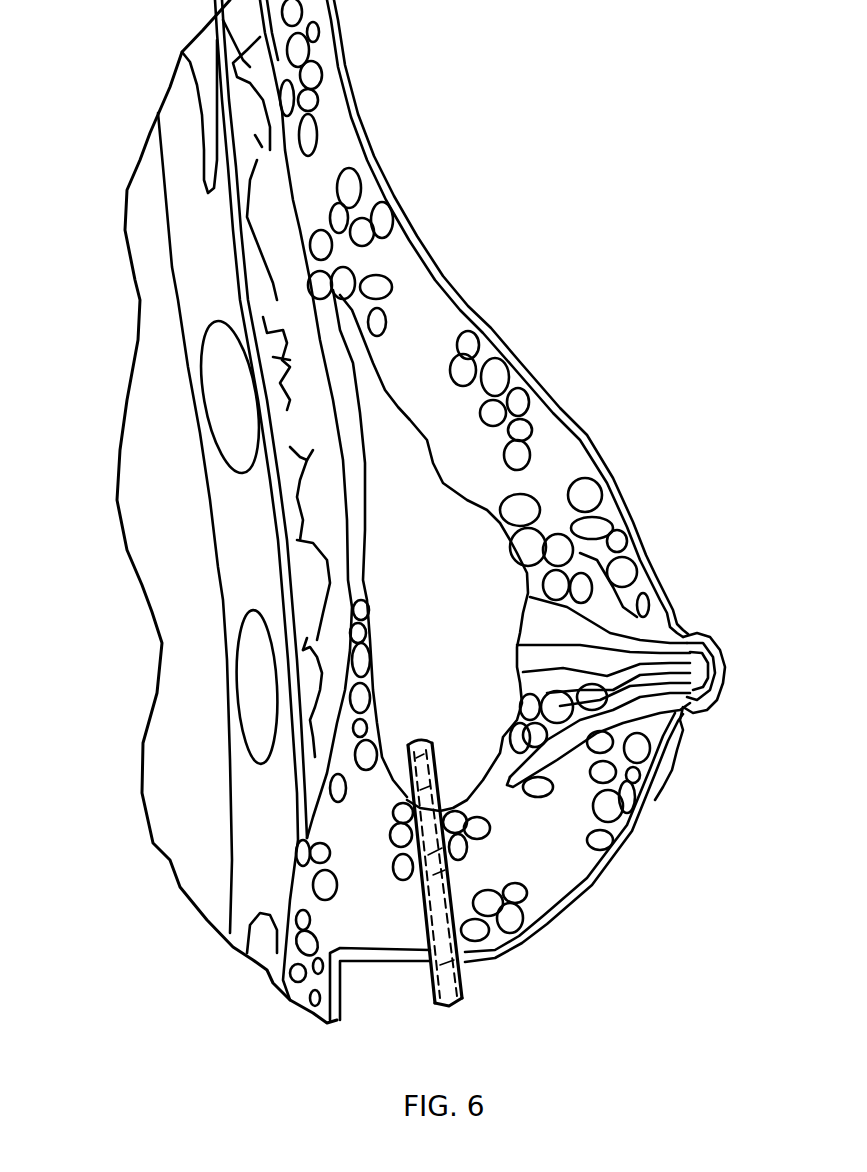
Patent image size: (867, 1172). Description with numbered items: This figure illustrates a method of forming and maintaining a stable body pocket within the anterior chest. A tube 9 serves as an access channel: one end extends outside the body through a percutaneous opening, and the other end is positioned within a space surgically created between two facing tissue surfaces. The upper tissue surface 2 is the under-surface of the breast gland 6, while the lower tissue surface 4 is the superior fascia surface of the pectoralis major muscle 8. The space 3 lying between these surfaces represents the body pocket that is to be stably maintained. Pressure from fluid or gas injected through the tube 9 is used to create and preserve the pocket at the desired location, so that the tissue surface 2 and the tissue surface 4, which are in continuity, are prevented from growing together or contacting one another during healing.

The tissue surface 2 is at (469, 530).
The space 3 is at (434, 610).
The tissue surface 4 is at (398, 546).
The breast gland 6 is at (605, 474).
The pectoralis major muscle 8 is at (189, 287).
The tube 9 is at (489, 873).